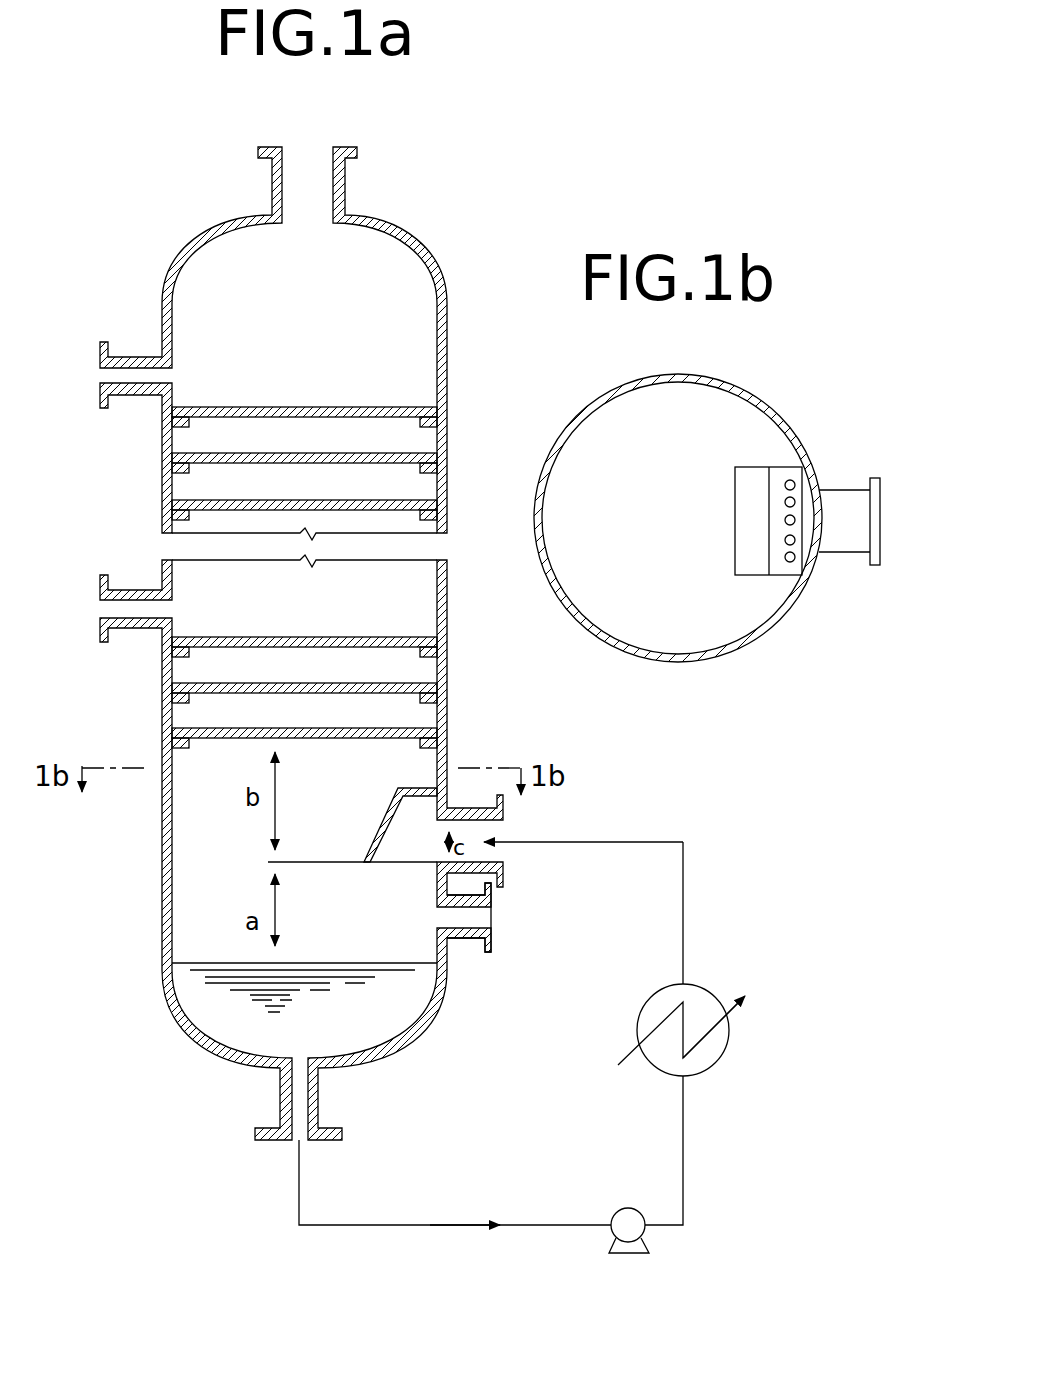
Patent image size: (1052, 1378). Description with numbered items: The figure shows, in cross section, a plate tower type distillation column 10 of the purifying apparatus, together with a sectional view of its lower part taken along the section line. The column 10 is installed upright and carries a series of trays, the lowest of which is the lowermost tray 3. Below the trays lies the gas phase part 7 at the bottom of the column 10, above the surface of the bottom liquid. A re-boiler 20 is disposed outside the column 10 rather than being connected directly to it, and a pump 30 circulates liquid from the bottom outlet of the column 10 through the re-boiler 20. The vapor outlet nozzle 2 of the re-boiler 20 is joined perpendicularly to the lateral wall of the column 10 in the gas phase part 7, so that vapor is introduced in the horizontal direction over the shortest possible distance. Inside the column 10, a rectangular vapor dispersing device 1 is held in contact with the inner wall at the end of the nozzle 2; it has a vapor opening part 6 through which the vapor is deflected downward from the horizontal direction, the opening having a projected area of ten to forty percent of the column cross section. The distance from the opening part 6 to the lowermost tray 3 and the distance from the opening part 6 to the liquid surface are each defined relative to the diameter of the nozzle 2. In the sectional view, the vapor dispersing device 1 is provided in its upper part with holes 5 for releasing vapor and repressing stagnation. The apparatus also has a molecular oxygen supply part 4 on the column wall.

In FIG. 1A, the vapor dispersing device 1 is at (423, 744).
In FIG. 1B, the vapor dispersing device 1 is at (764, 506).
In FIG. 1A, the vapor outlet nozzle 2 is at (492, 821).
In FIG. 1B, the vapor outlet nozzle 2 is at (840, 490).
In FIG. 1A, the lowermost tray 3 is at (355, 740).
In FIG. 1A, the molecular oxygen supply part 4 is at (488, 922).
In FIG. 1B, the holes 5 is at (785, 502).
In FIG. 1A, the vapor opening part 6 is at (400, 865).
In FIG. 1A, the gas phase part 7 is at (195, 850).
In FIG. 1A, the distillation column 10 is at (448, 352).
In FIG. 1A, the re-boiler 20 is at (727, 1050).
In FIG. 1A, the pump 30 is at (648, 1238).